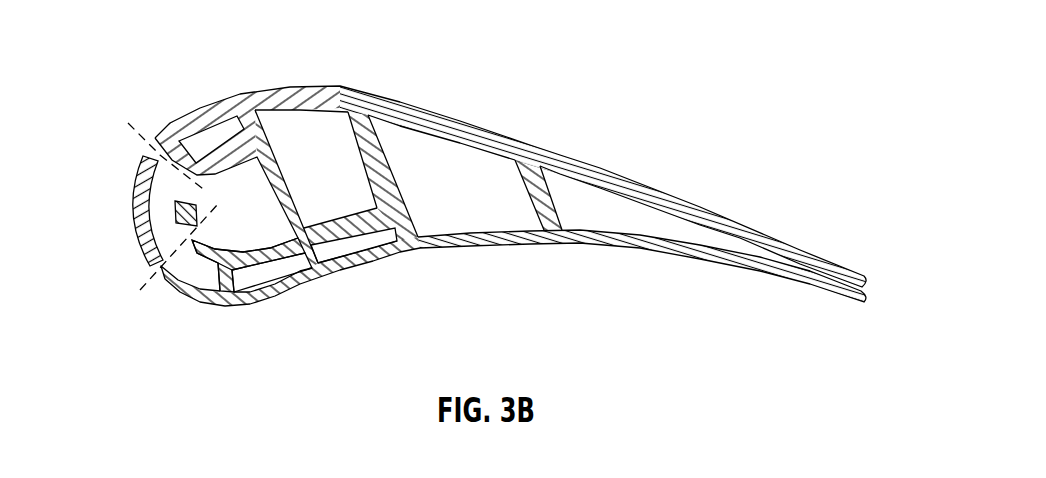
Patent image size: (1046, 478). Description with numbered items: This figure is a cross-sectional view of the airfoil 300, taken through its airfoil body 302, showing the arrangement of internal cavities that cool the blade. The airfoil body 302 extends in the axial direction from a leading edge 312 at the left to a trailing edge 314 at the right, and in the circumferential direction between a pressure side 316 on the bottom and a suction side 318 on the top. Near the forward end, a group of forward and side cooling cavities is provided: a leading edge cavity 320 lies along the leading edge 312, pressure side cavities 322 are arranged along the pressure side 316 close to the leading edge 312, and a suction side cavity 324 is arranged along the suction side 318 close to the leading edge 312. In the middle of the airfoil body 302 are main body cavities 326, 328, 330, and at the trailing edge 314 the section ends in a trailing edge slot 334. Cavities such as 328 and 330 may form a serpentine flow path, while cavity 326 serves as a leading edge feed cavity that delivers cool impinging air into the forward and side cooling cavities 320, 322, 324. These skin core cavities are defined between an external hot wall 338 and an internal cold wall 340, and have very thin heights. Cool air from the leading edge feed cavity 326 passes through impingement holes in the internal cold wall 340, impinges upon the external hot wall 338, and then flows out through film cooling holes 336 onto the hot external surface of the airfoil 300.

The airfoil 300 is at (656, 42).
The airfoil body 302 is at (660, 203).
The leading edge 312 is at (133, 213).
The trailing edge 314 is at (874, 273).
The pressure side 316 is at (572, 248).
The suction side 318 is at (462, 176).
The leading edge cavity 320 is at (161, 215).
The pressure side cavities 322 is at (269, 276).
The suction side cavity 324 is at (222, 131).
The leading edge feed cavity 326 is at (248, 202).
The main body cavity 328 is at (303, 126).
The main body cavity 330 is at (504, 132).
The trailing edge slot 334 is at (873, 291).
The film cooling holes 336 is at (148, 129).
The external hot wall 338 is at (147, 237).
The internal cold wall 340 is at (207, 256).